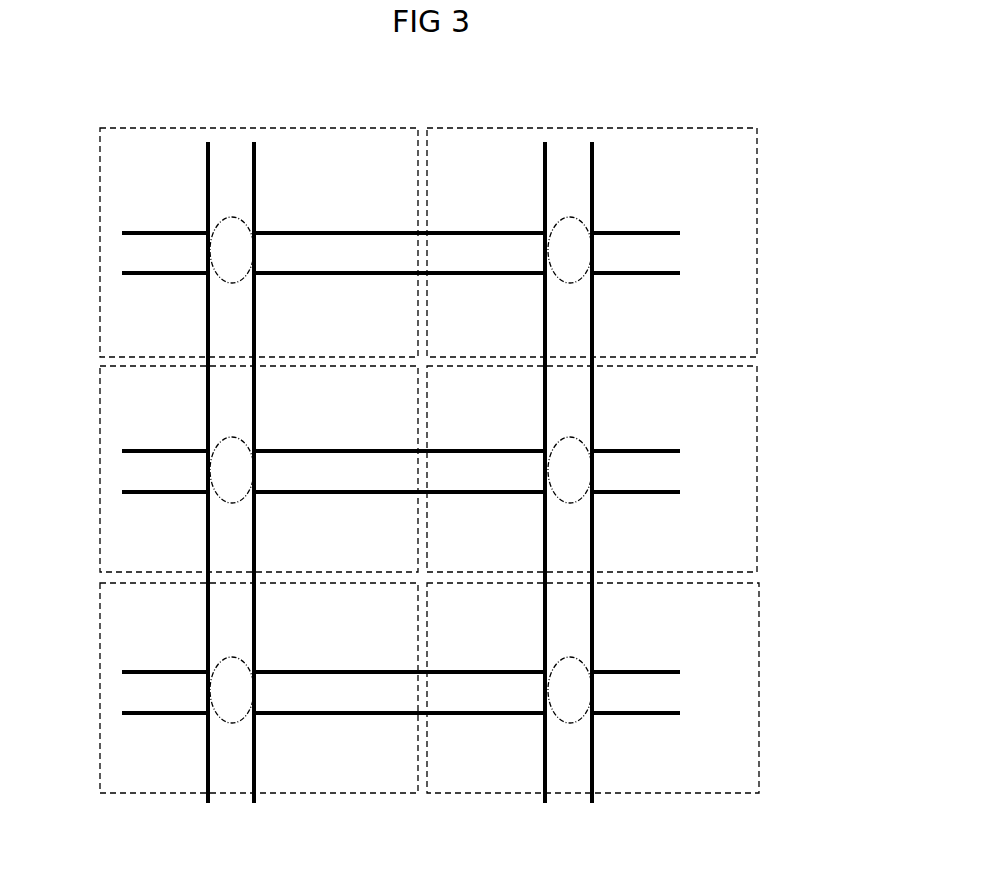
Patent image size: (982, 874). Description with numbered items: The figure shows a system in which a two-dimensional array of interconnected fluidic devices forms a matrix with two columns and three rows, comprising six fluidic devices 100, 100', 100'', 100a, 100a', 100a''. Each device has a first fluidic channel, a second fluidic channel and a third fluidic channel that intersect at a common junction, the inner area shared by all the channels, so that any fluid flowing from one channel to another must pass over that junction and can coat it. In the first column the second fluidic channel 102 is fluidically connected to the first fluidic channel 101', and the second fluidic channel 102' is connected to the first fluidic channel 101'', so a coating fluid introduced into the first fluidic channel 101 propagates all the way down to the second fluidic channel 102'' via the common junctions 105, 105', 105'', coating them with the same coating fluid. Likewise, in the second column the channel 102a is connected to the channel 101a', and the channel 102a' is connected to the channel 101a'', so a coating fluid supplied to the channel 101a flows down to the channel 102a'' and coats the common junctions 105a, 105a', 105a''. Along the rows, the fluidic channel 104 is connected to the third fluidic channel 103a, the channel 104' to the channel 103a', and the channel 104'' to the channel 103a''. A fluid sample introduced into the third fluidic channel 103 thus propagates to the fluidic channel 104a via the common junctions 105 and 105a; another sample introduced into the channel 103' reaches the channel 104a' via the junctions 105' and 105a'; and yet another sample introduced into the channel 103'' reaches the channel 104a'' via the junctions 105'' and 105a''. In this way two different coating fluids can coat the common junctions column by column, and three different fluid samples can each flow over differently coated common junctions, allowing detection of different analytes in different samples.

The fluidic device 100 is at (220, 242).
The fluidic device 100a is at (643, 242).
The first fluidic channel 101 is at (300, 207).
The first fluidic channel 101a is at (643, 207).
The second fluidic channel 102 is at (300, 319).
The second fluidic channel 102a is at (643, 319).
The third fluidic channel 103 is at (165, 204).
The third fluidic channel 103a is at (487, 203).
The fluidic channel 104 is at (399, 215).
The fluidic channel 104a is at (678, 215).
The common junction 105 is at (276, 265).
The common junction 105a is at (619, 265).
The fluidic device 100' is at (220, 469).
The fluidic device 100a' is at (647, 469).
The first fluidic channel 101' is at (304, 422).
The first fluidic channel 101a' is at (647, 422).
The second fluidic channel 102' is at (304, 537).
The second fluidic channel 102a' is at (647, 537).
The third fluidic channel 103' is at (165, 422).
The third fluidic channel 103a' is at (487, 421).
The fluidic channel 104' is at (399, 433).
The fluidic channel 104a' is at (682, 433).
The common junction 105' is at (279, 484).
The common junction 105a' is at (623, 484).
The fluidic device 100'' is at (220, 688).
The fluidic device 100a'' is at (650, 688).
The first fluidic channel 101'' is at (306, 641).
The first fluidic channel 101a'' is at (649, 641).
The second fluidic channel 102'' is at (306, 758).
The second fluidic channel 102a'' is at (649, 758).
The third fluidic channel 103'' is at (165, 643).
The third fluidic channel 103a'' is at (487, 642).
The fluidic channel 104'' is at (399, 654).
The fluidic channel 104a'' is at (684, 653).
The common junction 105'' is at (281, 704).
The common junction 105a'' is at (625, 704).